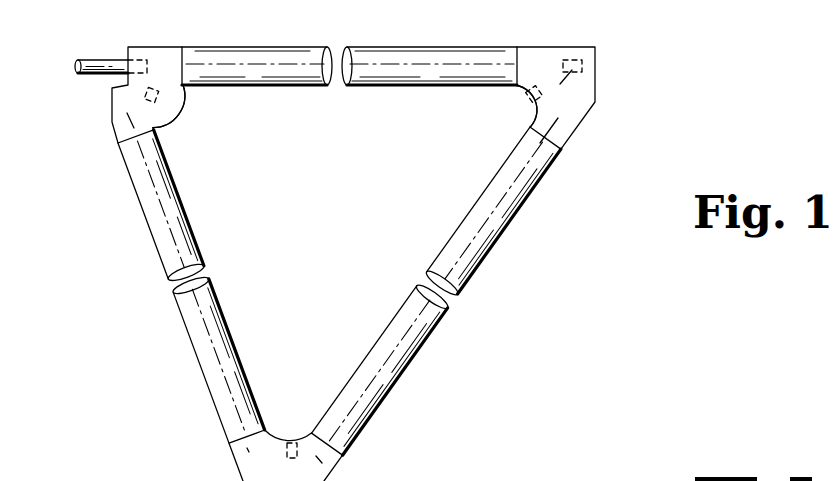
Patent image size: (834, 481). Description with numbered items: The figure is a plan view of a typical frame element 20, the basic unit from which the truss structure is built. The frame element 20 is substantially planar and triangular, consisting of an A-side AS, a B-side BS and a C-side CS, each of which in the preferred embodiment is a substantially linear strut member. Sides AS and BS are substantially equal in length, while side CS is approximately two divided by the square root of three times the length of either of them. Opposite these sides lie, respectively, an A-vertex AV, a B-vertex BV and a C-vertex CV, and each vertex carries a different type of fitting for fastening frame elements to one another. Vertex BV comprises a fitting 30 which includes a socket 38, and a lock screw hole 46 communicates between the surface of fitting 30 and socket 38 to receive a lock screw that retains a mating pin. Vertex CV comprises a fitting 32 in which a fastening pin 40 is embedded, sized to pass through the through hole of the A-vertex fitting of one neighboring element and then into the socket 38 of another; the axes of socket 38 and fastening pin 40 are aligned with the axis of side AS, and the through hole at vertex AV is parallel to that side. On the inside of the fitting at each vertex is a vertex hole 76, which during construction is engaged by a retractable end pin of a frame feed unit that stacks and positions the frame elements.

The frame element 20 is at (327, 237).
The vertex fitting 32 is at (128, 47).
The fastening pin 40 is at (82, 73).
The vertex fitting 30 is at (596, 48).
The socket 38 is at (590, 66).
The lock screw hole 46 is at (572, 70).
The vertex hole 76 is at (286, 451).
The C-vertex CV is at (165, 119).
The B-vertex BV is at (514, 113).
The A-vertex AV is at (290, 428).
The A-side AS is at (357, 87).
The B-side BS is at (160, 253).
The C-side CS is at (487, 258).